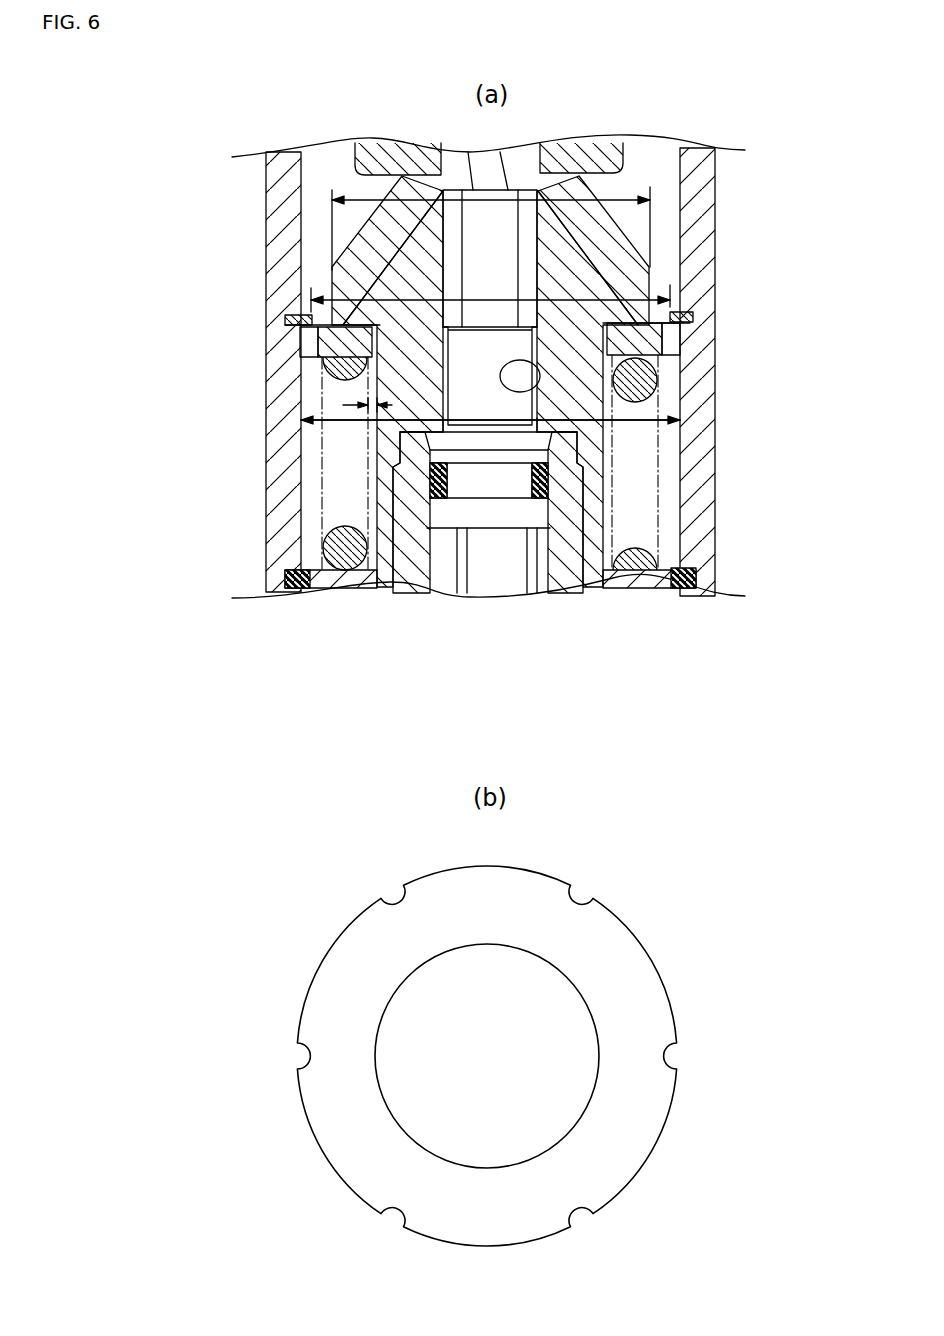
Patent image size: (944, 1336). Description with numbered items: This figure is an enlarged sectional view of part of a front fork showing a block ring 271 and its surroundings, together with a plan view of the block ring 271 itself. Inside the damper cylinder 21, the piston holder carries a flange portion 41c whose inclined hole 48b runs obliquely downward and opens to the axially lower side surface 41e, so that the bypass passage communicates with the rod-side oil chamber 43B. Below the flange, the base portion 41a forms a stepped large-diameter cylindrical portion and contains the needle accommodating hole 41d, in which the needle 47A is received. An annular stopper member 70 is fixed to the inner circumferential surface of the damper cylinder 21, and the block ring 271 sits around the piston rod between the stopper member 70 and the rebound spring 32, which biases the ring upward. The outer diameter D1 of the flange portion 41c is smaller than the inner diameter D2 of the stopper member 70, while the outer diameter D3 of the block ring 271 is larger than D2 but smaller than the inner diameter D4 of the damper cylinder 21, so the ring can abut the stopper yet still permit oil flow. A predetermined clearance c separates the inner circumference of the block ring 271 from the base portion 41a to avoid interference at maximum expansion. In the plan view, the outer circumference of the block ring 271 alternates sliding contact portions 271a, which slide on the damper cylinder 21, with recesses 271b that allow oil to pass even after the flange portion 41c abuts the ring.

The damper cylinder 21 is at (283, 455).
The rebound spring 32 is at (340, 517).
The base portion 41a is at (596, 508).
The flange portion 41c is at (623, 272).
The needle accommodating hole 41d is at (500, 376).
The axially lower side surface 41e is at (330, 368).
The rod-side oil chamber 43B is at (345, 490).
The needle 47A is at (490, 228).
The inclined hole 48b is at (365, 240).
The stopper member 70 is at (290, 320).
The block ring 271 is at (488, 782).
The sliding contact portions 271a is at (668, 338).
The recesses 271b is at (305, 335).
The clearance c is at (352, 403).
The outer diameter of the flange portion D1 is at (625, 195).
The inner diameter of the stopper member D2 is at (310, 292).
The outer diameter of the block ring D3 is at (690, 443).
The inner diameter of the damper cylinder D4 is at (690, 443).